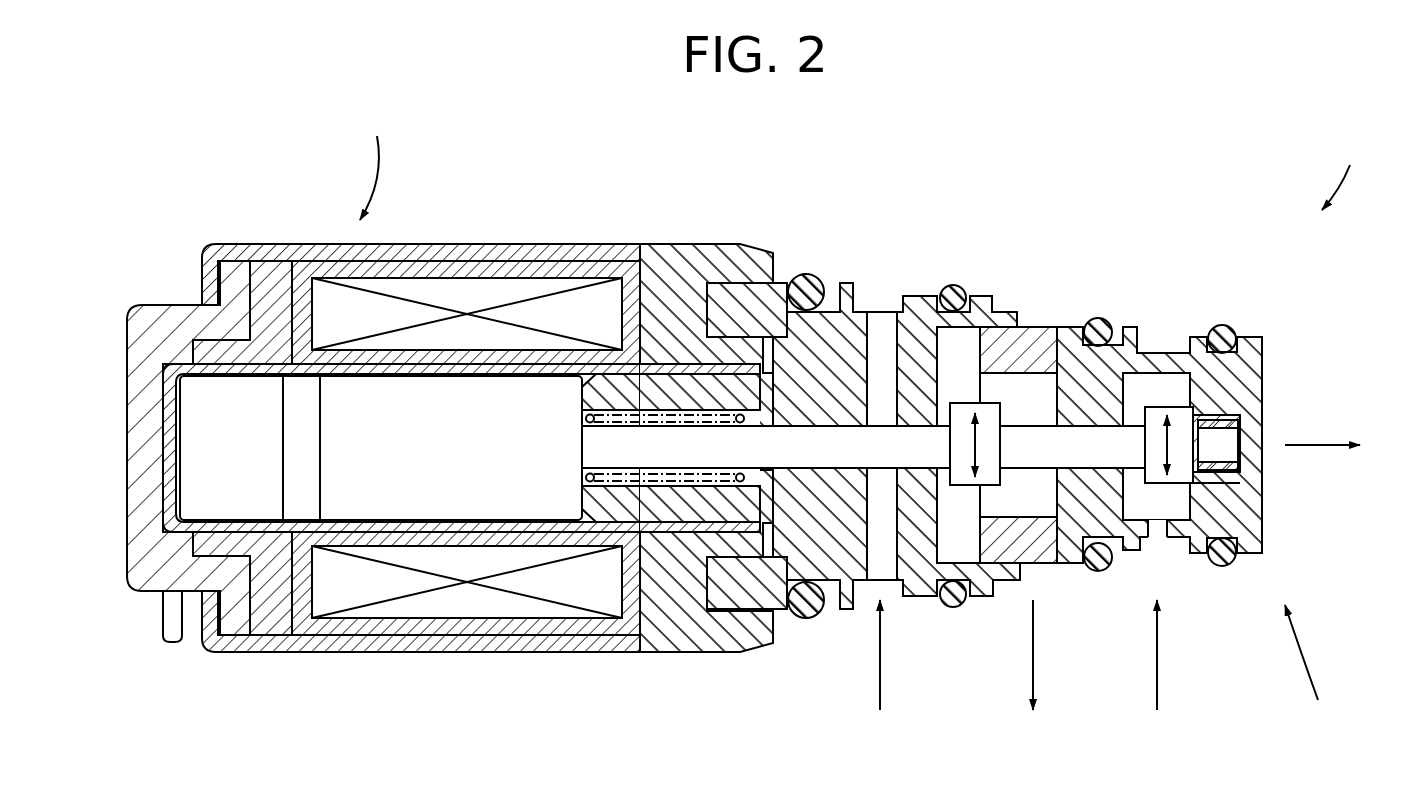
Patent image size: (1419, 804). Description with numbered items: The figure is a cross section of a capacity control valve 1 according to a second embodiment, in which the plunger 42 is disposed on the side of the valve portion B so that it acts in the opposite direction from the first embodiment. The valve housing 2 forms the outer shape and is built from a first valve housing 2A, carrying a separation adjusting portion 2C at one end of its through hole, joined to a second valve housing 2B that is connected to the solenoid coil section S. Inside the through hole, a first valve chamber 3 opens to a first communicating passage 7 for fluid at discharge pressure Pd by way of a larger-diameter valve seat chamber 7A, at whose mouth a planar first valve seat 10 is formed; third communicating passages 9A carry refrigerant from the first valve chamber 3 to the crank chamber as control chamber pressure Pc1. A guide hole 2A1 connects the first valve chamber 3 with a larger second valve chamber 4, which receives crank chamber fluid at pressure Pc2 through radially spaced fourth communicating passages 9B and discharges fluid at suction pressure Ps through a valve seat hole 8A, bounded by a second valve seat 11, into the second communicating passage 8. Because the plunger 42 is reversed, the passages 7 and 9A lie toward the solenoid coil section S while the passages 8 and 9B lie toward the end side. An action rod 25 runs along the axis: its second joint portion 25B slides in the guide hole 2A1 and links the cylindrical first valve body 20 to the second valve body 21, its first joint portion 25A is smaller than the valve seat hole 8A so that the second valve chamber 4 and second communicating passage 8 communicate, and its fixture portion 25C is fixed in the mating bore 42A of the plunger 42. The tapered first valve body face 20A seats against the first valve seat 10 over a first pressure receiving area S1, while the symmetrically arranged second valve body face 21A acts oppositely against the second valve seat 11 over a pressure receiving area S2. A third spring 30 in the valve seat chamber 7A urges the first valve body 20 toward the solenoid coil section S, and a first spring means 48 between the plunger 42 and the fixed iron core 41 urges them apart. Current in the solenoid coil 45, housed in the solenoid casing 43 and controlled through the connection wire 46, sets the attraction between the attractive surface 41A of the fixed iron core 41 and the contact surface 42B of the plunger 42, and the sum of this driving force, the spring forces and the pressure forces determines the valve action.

The solenoid coil section S is at (390, 132).
The capacity control valve 1 is at (1347, 158).
The solenoid casing 43 is at (466, 250).
The solenoid coil 45 is at (549, 290).
The mating bore 42A is at (713, 432).
The fixture portion 25C is at (772, 395).
The first valve body face 20A is at (908, 400).
The action rod 25 is at (806, 273).
The valve seat chamber 7A is at (885, 375).
The first valve body 20 is at (970, 417).
The first valve chamber 3 is at (1028, 383).
The second valve body 21 is at (1173, 413).
The first pressure receiving area S1 is at (982, 437).
The guide hole 2A1 is at (1078, 417).
The pressure receiving area S2 is at (1148, 420).
The second valve seat 11 is at (1178, 365).
The valve seat hole 8A is at (1223, 440).
The first valve housing 2A is at (1253, 343).
The separation adjusting portion 2C is at (1253, 387).
The second communicating passage 8 is at (1250, 437).
The suction pressure Ps is at (1342, 443).
The third spring 30 is at (1250, 466).
The second valve body face 21A is at (1243, 490).
The valve housing 2 is at (1268, 550).
The valve portion B is at (1340, 720).
The connection wire 46 is at (170, 620).
The fixed iron core 41 is at (362, 500).
The contact surface 42B is at (575, 522).
The attractive surface 41A is at (617, 522).
The plunger 42 is at (702, 512).
The first spring means 48 is at (728, 535).
The second valve housing 2B is at (780, 612).
The first joint portion 25A is at (862, 453).
The first communicating passage 7 is at (887, 570).
The first valve seat 10 is at (960, 535).
The second joint portion 25B is at (1007, 517).
The third communicating passage 9A is at (1038, 560).
The fourth communicating passage 9B is at (1150, 533).
The second valve chamber 4 is at (1177, 505).
The discharge pressure Pd is at (882, 671).
The control chamber pressure Pc1 is at (1033, 671).
The crank chamber pressure Pc2 is at (1157, 671).